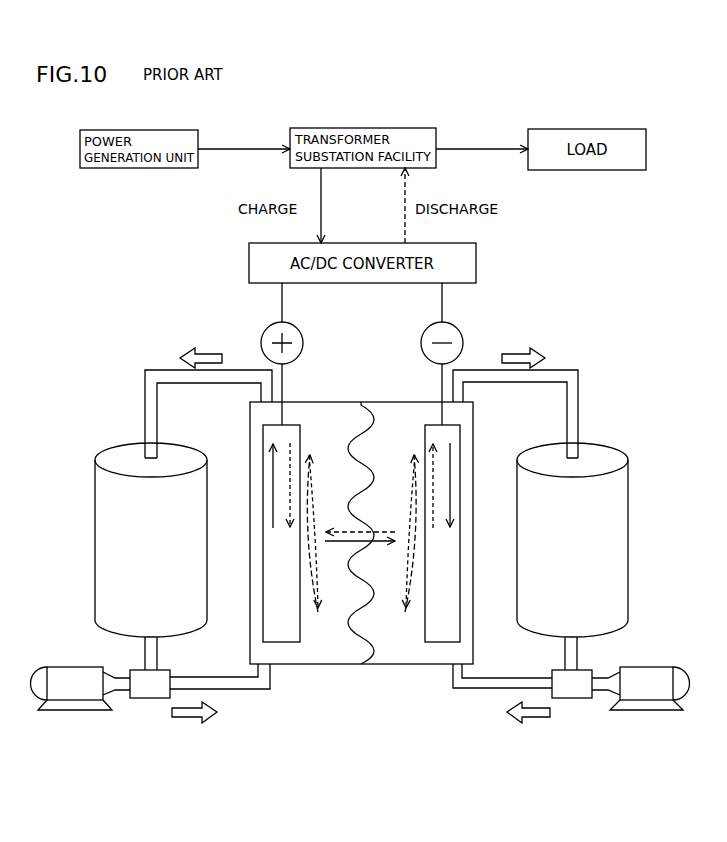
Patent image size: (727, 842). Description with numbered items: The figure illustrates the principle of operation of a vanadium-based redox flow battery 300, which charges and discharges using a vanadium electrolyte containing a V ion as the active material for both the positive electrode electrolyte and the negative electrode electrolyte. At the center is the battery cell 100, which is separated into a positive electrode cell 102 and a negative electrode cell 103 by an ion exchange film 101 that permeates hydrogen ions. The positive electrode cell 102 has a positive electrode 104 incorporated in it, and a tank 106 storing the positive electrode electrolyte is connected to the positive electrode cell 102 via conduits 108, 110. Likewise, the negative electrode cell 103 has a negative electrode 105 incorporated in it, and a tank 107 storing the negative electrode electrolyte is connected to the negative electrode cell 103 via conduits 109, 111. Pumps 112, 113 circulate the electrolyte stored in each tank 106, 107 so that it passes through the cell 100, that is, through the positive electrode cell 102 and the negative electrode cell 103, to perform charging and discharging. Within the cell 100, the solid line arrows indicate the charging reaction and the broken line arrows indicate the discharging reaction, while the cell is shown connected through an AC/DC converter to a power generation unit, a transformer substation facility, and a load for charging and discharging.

The battery cell 100 is at (335, 396).
The ion exchange film 101 is at (353, 666).
The positive electrode cell 102 is at (305, 666).
The negative electrode cell 103 is at (417, 666).
The positive electrode 104 is at (262, 630).
The negative electrode 105 is at (461, 630).
The tank 106 is at (110, 446).
The tank 107 is at (612, 447).
The conduit 108 is at (238, 690).
The conduit 109 is at (486, 690).
The conduit 110 is at (160, 368).
The conduit 111 is at (566, 368).
The pump 112 is at (62, 668).
The pump 113 is at (660, 668).
The RF battery 300 is at (290, 752).